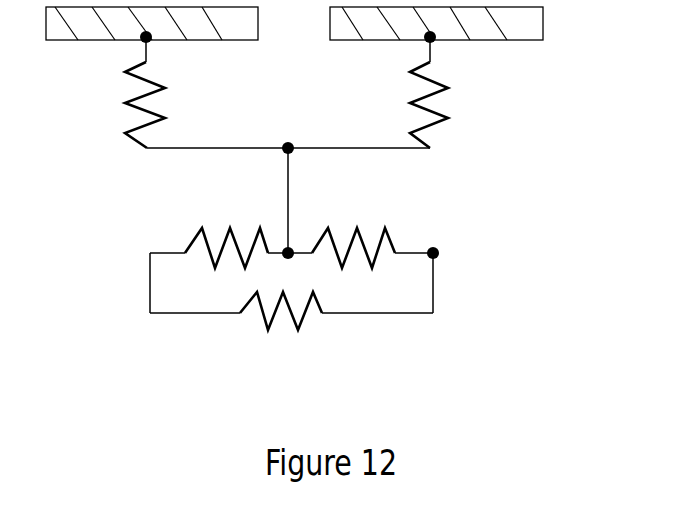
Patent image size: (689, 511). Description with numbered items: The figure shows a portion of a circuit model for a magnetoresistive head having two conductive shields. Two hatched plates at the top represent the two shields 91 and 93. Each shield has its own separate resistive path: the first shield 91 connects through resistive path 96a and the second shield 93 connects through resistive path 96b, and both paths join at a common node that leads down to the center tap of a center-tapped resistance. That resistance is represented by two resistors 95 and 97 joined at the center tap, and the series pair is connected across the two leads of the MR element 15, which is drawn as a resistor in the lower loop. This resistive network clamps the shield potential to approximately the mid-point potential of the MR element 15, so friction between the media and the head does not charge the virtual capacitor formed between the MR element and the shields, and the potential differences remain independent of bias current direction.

The shield 91 is at (253, 23).
The shield 93 is at (538, 23).
The resistive path 96a is at (175, 105).
The resistive path 96b is at (458, 105).
The resistor 95 is at (192, 227).
The resistor 97 is at (403, 233).
The MR element 15 is at (310, 327).